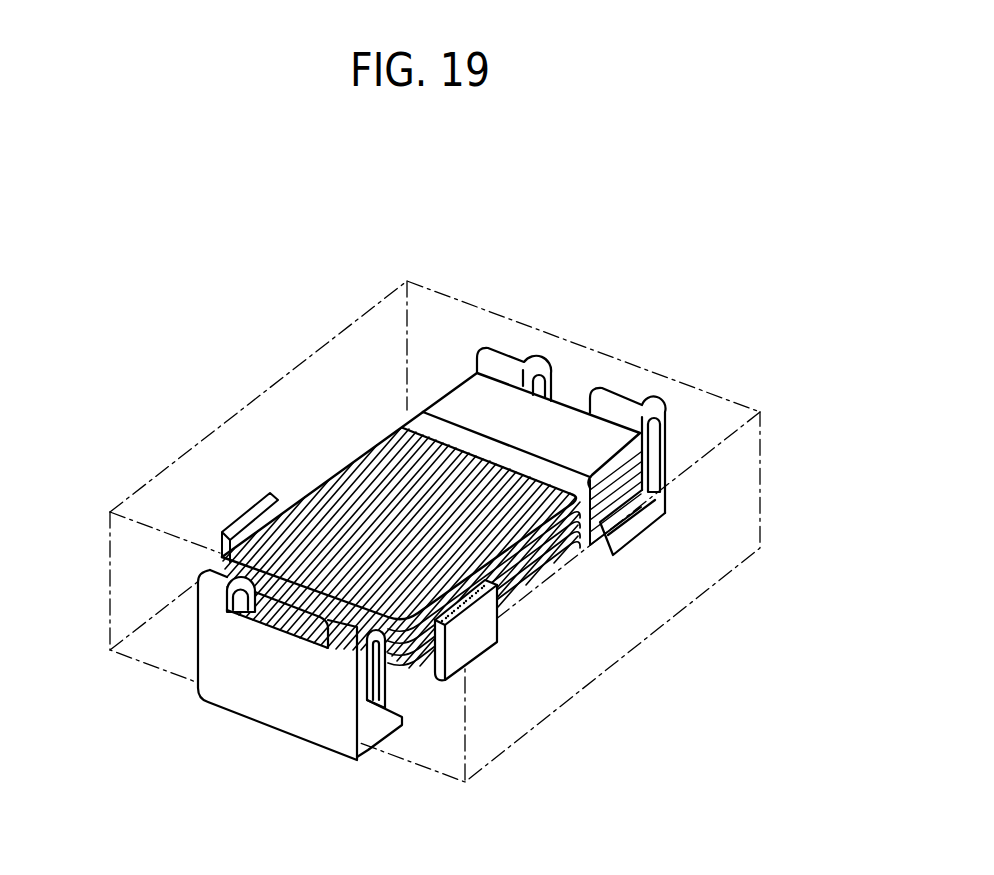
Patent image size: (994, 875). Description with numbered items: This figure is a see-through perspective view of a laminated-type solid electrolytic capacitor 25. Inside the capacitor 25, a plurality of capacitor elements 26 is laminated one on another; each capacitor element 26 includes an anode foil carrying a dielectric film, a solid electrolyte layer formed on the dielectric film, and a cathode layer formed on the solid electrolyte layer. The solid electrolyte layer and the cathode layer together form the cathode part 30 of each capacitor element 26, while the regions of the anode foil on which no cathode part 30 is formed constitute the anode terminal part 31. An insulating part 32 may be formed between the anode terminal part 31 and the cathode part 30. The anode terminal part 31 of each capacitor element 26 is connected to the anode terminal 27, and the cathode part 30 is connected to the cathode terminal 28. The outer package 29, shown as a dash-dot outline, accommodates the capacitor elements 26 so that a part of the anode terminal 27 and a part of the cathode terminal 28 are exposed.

The capacitor 25 is at (713, 327).
The capacitor element 26 is at (335, 463).
The anode terminal 27 is at (620, 393).
The cathode terminal 28 is at (270, 693).
The outer package 29 is at (712, 413).
The cathode part 30 is at (303, 507).
The anode terminal part 31 is at (453, 405).
The insulating part 32 is at (412, 423).